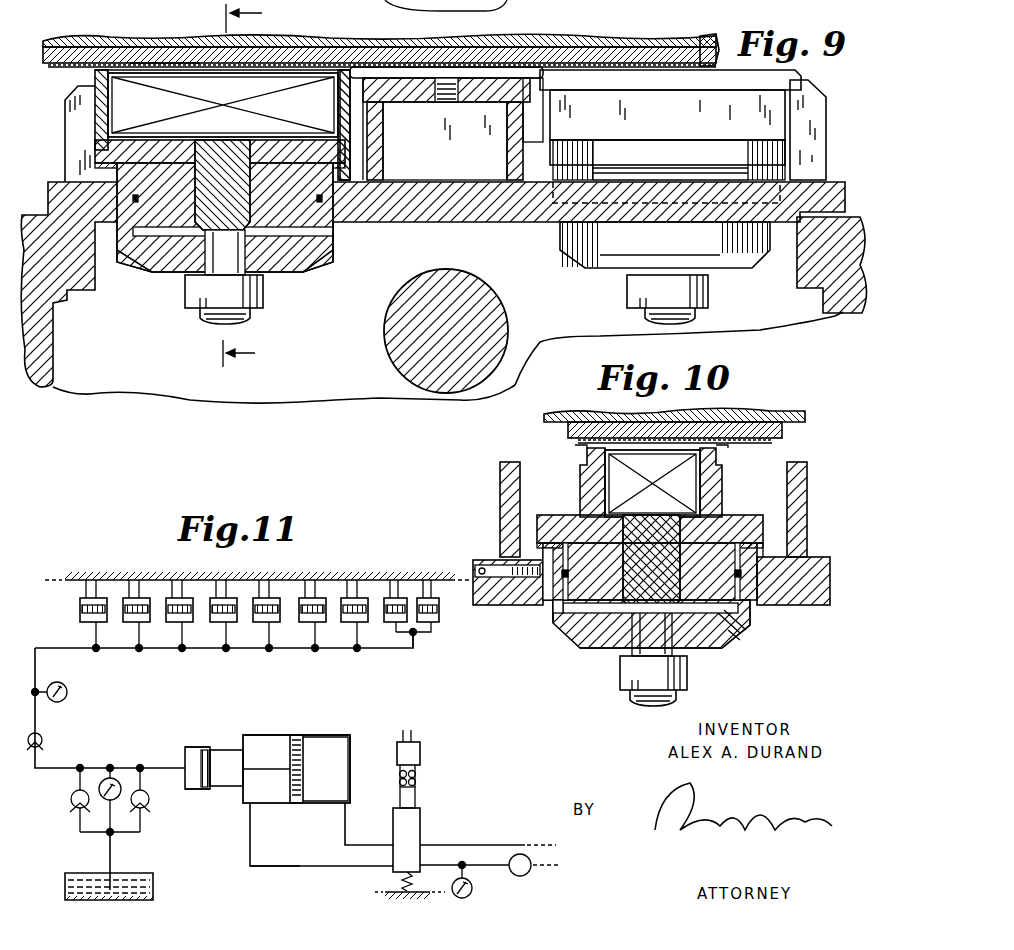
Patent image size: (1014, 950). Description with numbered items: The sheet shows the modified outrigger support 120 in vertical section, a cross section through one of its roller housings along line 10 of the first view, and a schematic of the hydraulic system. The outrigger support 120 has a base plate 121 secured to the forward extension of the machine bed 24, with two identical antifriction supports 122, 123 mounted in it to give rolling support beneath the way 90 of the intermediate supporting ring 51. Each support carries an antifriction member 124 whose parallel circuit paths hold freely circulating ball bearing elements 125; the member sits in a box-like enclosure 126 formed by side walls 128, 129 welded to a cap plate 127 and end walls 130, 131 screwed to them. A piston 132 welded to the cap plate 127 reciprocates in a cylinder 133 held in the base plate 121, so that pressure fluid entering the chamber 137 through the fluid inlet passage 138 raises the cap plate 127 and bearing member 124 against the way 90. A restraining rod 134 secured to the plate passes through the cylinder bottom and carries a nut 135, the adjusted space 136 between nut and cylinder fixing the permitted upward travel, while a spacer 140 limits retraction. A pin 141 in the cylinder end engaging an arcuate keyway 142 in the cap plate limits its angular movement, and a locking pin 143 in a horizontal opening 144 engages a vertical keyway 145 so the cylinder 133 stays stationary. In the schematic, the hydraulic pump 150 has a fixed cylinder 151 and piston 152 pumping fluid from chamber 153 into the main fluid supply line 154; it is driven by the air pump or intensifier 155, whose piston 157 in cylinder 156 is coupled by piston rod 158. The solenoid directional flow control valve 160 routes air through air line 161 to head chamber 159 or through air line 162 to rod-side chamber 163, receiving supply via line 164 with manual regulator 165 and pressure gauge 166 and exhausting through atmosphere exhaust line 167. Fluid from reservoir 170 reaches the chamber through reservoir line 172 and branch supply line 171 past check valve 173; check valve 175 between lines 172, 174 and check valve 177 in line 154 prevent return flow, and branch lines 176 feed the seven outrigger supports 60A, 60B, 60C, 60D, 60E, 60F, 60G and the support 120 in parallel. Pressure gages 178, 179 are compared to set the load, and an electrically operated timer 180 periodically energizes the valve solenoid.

In FIG. 9, the line 10— 10 is at (227, 186).
In FIG. 9, the bed 24 is at (120, 385).
In FIG. 9, the intermediate supporting ring 51 is at (706, 34).
In FIG. 11, the outrigger support 60A is at (86, 580).
In FIG. 11, the outrigger support 60B is at (127, 580).
In FIG. 11, the outrigger support 60C is at (173, 580).
In FIG. 11, the outrigger support 60D is at (240, 580).
In FIG. 11, the outrigger support 60E is at (278, 580).
In FIG. 11, the outrigger support 60F is at (307, 580).
In FIG. 11, the outrigger support 60G is at (367, 578).
In FIG. 9, the way 90 is at (48, 44).
In FIG. 11, the way 90 is at (440, 582).
In FIG. 9, the modified outrigger support 120 is at (150, 12).
In FIG. 10, the modified outrigger support 120 is at (822, 616).
In FIG. 11, the modified outrigger support 120 is at (383, 580).
In FIG. 9, the base plate 121 is at (62, 20).
In FIG. 10, the base plate 121 is at (830, 583).
In FIG. 9, the antifriction support 122 is at (288, 20).
In FIG. 10, the antifriction support 122 is at (588, 640).
In FIG. 9, the antifriction support 123 is at (603, 6).
In FIG. 10, the antifriction support 123 is at (755, 614).
In FIG. 9, the antifriction member 124 is at (223, 105).
In FIG. 10, the antifriction member 124 is at (670, 476).
In FIG. 9, the ball bearing elements 125 is at (174, 46).
In FIG. 10, the ball bearing elements 125 is at (640, 408).
In FIG. 9, the box-like enclosure 126 is at (343, 40).
In FIG. 9, the cap plate 127 is at (168, 147).
In FIG. 10, the cap plate 127 is at (767, 513).
In FIG. 9, the side wall 128 is at (672, 128).
In FIG. 10, the side wall 128 is at (580, 473).
In FIG. 10, the side wall 129 is at (717, 477).
In FIG. 9, the end wall 130 is at (98, 116).
In FIG. 9, the end wall 131 is at (384, 121).
In FIG. 9, the piston 132 is at (160, 268).
In FIG. 10, the piston 132 is at (600, 583).
In FIG. 9, the cylinder 133 is at (168, 274).
In FIG. 10, the cylinder 133 is at (690, 652).
In FIG. 9, the restraining rod 134 is at (217, 155).
In FIG. 10, the restraining rod 134 is at (672, 520).
In FIG. 9, the nut 135 is at (277, 318).
In FIG. 10, the nut 135 is at (687, 684).
In FIG. 9, the space 136 is at (267, 292).
In FIG. 10, the space 136 is at (686, 672).
In FIG. 9, the chamber 137 is at (338, 242).
In FIG. 10, the chamber 137 is at (760, 632).
In FIG. 10, the fluid inlet passage 138 is at (737, 635).
In FIG. 9, the spacer 140 is at (110, 164).
In FIG. 10, the spacer 140 is at (767, 546).
In FIG. 9, the pin 141 is at (386, 174).
In FIG. 9, the arcuate keyway 142 is at (332, 156).
In FIG. 10, the locking pin 143 is at (522, 578).
In FIG. 10, the horizontal opening 144 is at (485, 562).
In FIG. 10, the vertical keyway 145 is at (552, 630).
In FIG. 11, the hydraulic pump 150 is at (228, 745).
In FIG. 11, the fixed cylinder 151 is at (233, 748).
In FIG. 11, the piston 152 is at (205, 789).
In FIG. 11, the chamber 153 is at (193, 752).
In FIG. 11, the main fluid supply line 154 is at (74, 650).
In FIG. 11, the air pump or intensifier 155 is at (323, 728).
In FIG. 11, the cylinder 156 is at (340, 743).
In FIG. 11, the piston 157 is at (305, 767).
In FIG. 11, the piston rod 158 is at (267, 756).
In FIG. 11, the chamber 159 is at (352, 740).
In FIG. 11, the solenoid actuated directional flow control valve 160 is at (413, 827).
In FIG. 11, the air line 161 is at (345, 819).
In FIG. 11, the air line 162 is at (310, 872).
In FIG. 11, the chamber 163 is at (270, 790).
In FIG. 11, the line 164 is at (533, 868).
In FIG. 11, the manual adjustable regulator 165 is at (473, 889).
In FIG. 11, the pressure gauge 166 is at (470, 872).
In FIG. 11, the atmosphere exhaust line 167 is at (495, 823).
In FIG. 11, the reservoir 170 is at (155, 884).
In FIG. 11, the branch supply line 171 is at (143, 779).
In FIG. 11, the reservoir line 172 is at (113, 845).
In FIG. 11, the check valve 173 is at (150, 809).
In FIG. 11, the line 174 is at (78, 783).
In FIG. 11, the check valve 175 is at (70, 810).
In FIG. 11, the branch lines 176 is at (82, 648).
In FIG. 11, the check valve 177 is at (43, 733).
In FIG. 11, the pressure gage 178 is at (53, 676).
In FIG. 11, the pressure gage 179 is at (116, 802).
In FIG. 11, the electrically operated timer 180 is at (420, 750).